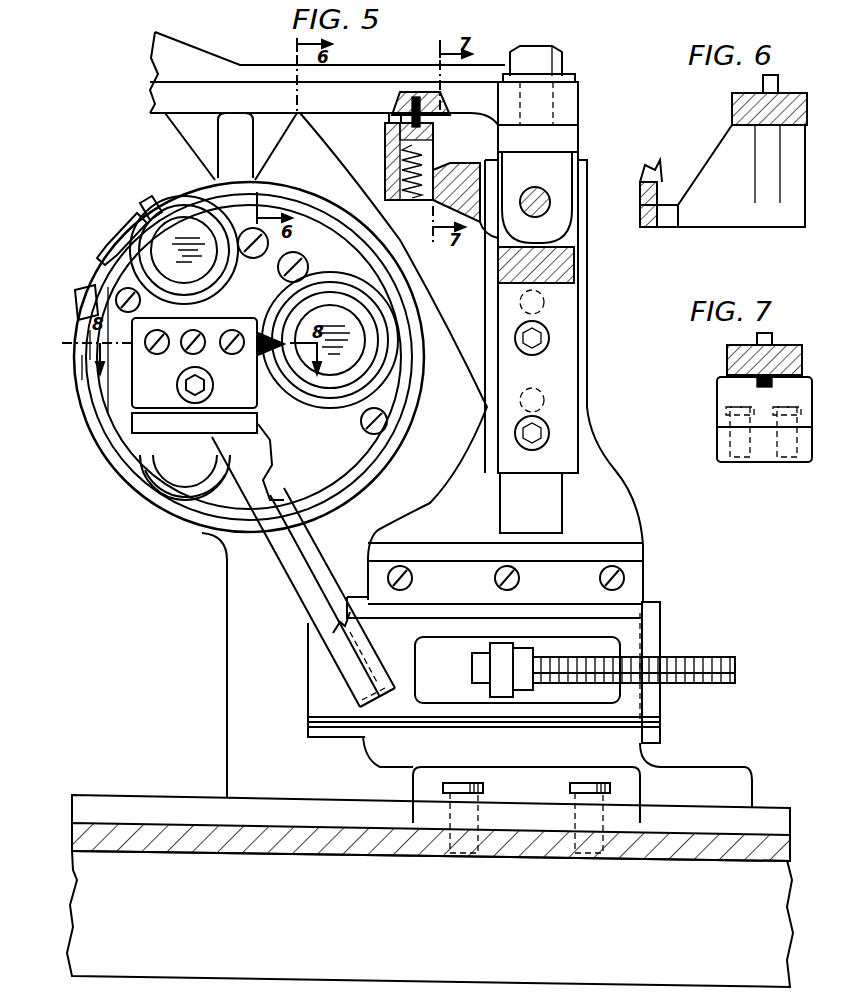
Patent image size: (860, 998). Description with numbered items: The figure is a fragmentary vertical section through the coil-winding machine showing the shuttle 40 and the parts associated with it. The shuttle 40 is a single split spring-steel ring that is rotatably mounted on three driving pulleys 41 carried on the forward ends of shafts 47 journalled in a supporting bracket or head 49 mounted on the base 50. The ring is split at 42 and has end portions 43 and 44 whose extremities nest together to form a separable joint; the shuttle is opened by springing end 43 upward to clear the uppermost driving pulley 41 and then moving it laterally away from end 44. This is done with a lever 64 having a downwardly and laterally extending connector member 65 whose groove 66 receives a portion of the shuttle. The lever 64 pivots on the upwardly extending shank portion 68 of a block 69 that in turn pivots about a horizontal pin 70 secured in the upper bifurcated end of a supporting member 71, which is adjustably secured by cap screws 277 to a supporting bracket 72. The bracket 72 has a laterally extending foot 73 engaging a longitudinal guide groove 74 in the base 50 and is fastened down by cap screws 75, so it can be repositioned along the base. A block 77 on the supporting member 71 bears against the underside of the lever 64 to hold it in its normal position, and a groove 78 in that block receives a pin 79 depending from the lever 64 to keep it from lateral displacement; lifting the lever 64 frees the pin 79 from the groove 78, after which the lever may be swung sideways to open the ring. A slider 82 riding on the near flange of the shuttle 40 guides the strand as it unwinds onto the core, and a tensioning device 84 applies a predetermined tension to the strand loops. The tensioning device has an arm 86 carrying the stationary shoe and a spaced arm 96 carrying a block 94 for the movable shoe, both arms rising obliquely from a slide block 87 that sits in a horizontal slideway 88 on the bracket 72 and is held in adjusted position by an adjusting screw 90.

In FIG. 5, the shuttle 40 is at (195, 178).
In FIG. 6, the shuttle 40 is at (656, 184).
In FIG. 5, the driving pulleys 41 is at (173, 212).
In FIG. 5, the split 42 is at (90, 345).
In FIG. 5, the end portion 43 is at (72, 305).
In FIG. 5, the end portion 44 is at (92, 356).
In FIG. 5, the shafts 47 is at (158, 226).
In FIG. 5, the supporting bracket or head 49 is at (412, 284).
In FIG. 5, the base 50 is at (150, 824).
In FIG. 5, the lever 64 is at (158, 48).
In FIG. 6, the lever 64 is at (790, 97).
In FIG. 7, the lever 64 is at (790, 348).
In FIG. 6, the arm or connector member 65 is at (728, 222).
In FIG. 6, the groove 66 is at (655, 228).
In FIG. 5, the shank portion 68 is at (575, 95).
In FIG. 5, the block 69 is at (566, 140).
In FIG. 5, the horizontal pin 70 is at (543, 210).
In FIG. 5, the supporting member 71 is at (565, 270).
In FIG. 7, the supporting member 71 is at (760, 462).
In FIG. 5, the supporting bracket 72 is at (628, 480).
In FIG. 5, the foot 73 is at (630, 828).
In FIG. 5, the guide groove 74 is at (695, 829).
In FIG. 5, the cap screws 75 is at (462, 855).
In FIG. 5, the block 77 is at (392, 148).
In FIG. 7, the block 77 is at (730, 397).
In FIG. 5, the groove 78 is at (390, 120).
In FIG. 7, the groove 78 is at (768, 386).
In FIG. 5, the pin 79 is at (406, 100).
In FIG. 7, the pin 79 is at (757, 380).
In FIG. 5, the slider 82 is at (92, 258).
In FIG. 5, the tensioning device 84 is at (261, 318).
In FIG. 5, the arm 86 is at (326, 560).
In FIG. 5, the slide block 87 is at (655, 632).
In FIG. 5, the horizontal slideway 88 is at (630, 583).
In FIG. 5, the adjusting screw 90 is at (708, 666).
In FIG. 5, the block 94 is at (136, 388).
In FIG. 5, the arm 96 is at (268, 497).
In FIG. 5, the cap screws 277 is at (550, 338).